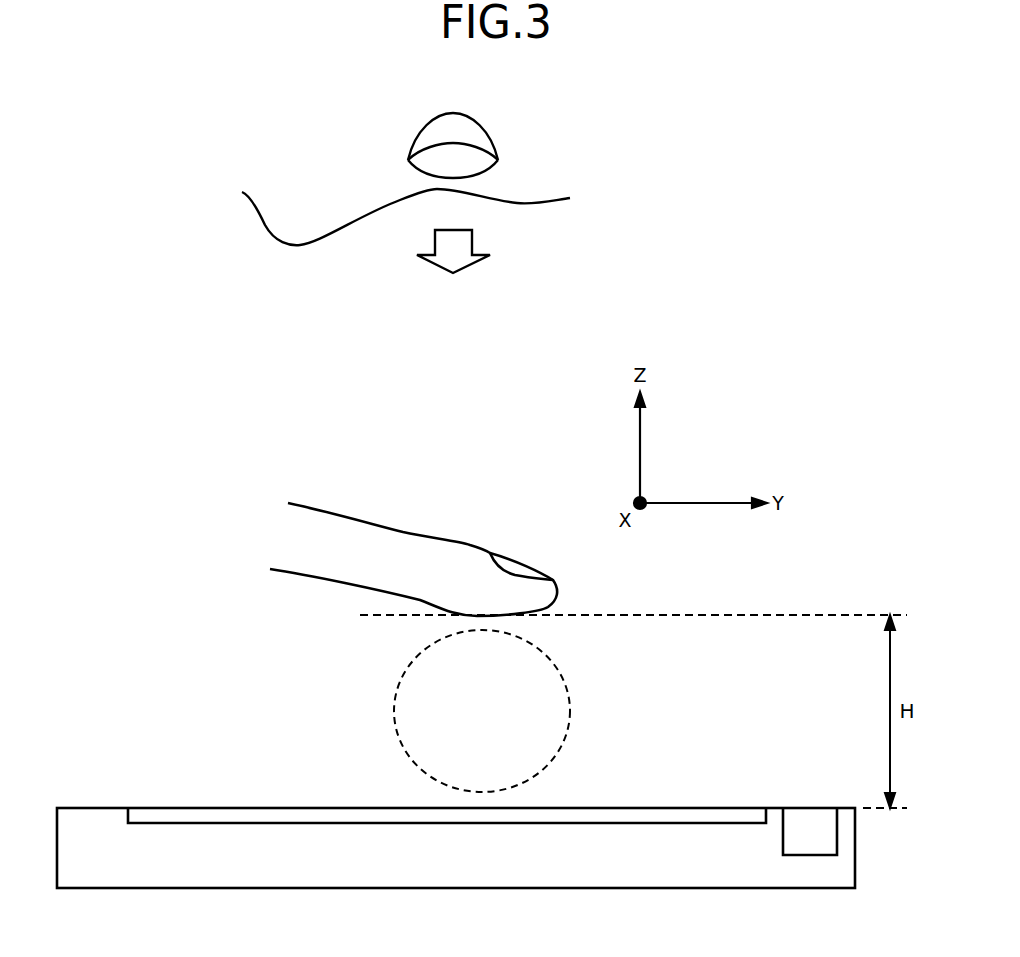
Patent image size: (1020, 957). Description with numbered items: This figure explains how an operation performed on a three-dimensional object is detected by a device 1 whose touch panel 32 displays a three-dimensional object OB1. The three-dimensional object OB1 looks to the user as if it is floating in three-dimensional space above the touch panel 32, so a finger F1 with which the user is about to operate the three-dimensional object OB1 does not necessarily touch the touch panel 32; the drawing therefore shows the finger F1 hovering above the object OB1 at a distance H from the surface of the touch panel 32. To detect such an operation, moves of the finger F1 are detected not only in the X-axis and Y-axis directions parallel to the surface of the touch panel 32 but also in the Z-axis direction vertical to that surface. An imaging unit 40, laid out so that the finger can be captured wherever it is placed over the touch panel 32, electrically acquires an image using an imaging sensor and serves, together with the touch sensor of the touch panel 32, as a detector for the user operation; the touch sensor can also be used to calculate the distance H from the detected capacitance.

The finger F1 is at (438, 532).
The three-dimensional object OB1 is at (570, 690).
The electronic device / input apparatus 1 is at (90, 807).
The touch panel 32 is at (193, 807).
The imaging unit 40 is at (808, 807).